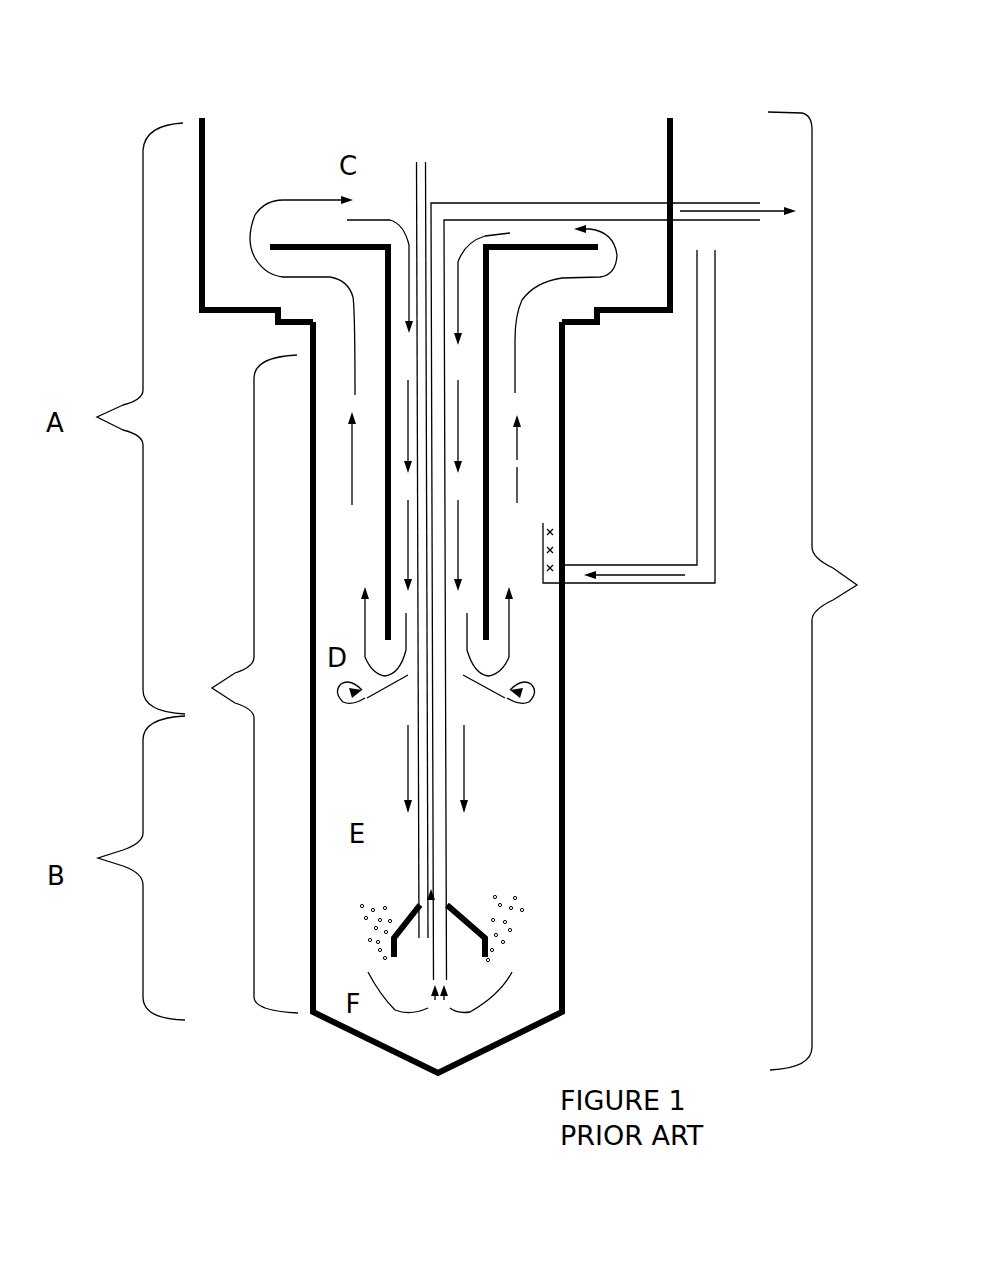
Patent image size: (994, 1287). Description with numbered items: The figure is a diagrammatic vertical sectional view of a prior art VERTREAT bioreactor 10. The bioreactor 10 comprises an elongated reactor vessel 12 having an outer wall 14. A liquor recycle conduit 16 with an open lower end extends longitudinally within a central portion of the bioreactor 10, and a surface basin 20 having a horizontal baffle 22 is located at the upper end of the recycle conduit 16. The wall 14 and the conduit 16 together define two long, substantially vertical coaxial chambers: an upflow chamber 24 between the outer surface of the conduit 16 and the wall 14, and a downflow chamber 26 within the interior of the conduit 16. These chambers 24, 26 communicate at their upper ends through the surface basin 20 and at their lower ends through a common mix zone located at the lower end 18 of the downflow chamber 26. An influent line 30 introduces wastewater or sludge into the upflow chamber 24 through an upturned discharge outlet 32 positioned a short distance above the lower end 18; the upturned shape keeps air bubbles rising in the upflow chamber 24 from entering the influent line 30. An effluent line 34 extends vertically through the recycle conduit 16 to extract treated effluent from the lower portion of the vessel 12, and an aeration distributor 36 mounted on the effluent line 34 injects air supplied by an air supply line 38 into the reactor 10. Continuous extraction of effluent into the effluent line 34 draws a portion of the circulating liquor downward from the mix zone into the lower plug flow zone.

The bioreactor 10 is at (828, 591).
The reactor vessel 12 is at (234, 684).
The outer wall 14 is at (565, 742).
The liquor recycle conduit 16 is at (488, 570).
The lower end of downflow chamber 18 is at (455, 660).
The surface basin 20 is at (672, 145).
The horizontal baffle 22 is at (525, 247).
The upflow chamber 24 is at (518, 460).
The downflow chamber 26 is at (460, 537).
The influent line 30 is at (716, 478).
The upturned discharge outlet 32 is at (562, 550).
The effluent line 34 is at (445, 448).
The aeration distributor 36 is at (477, 923).
The air supply line 38 is at (426, 162).